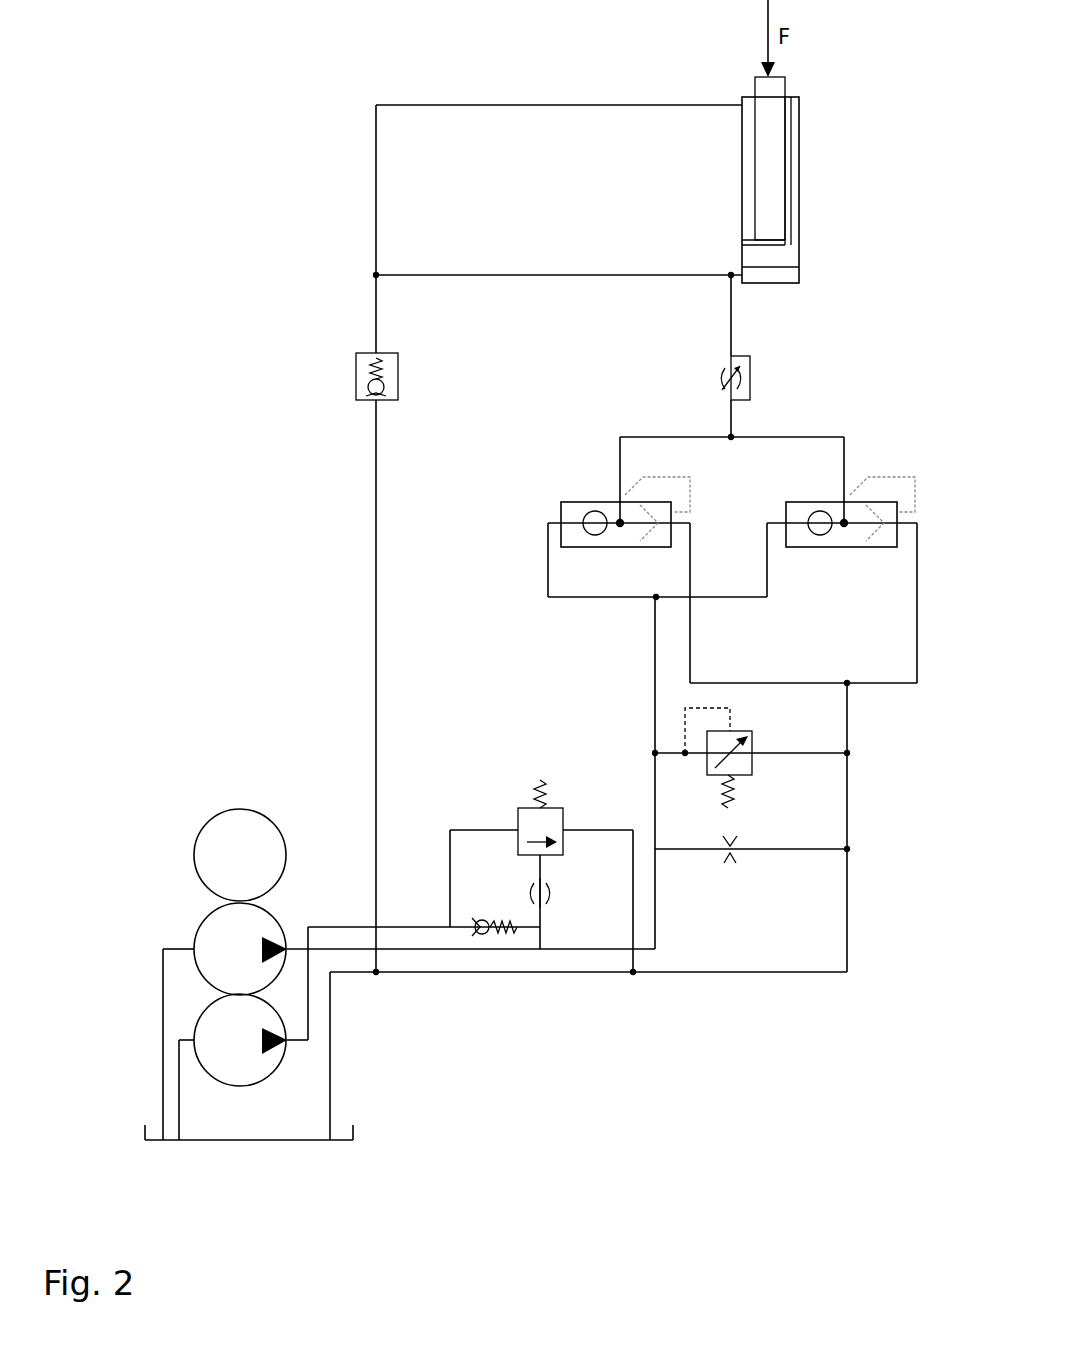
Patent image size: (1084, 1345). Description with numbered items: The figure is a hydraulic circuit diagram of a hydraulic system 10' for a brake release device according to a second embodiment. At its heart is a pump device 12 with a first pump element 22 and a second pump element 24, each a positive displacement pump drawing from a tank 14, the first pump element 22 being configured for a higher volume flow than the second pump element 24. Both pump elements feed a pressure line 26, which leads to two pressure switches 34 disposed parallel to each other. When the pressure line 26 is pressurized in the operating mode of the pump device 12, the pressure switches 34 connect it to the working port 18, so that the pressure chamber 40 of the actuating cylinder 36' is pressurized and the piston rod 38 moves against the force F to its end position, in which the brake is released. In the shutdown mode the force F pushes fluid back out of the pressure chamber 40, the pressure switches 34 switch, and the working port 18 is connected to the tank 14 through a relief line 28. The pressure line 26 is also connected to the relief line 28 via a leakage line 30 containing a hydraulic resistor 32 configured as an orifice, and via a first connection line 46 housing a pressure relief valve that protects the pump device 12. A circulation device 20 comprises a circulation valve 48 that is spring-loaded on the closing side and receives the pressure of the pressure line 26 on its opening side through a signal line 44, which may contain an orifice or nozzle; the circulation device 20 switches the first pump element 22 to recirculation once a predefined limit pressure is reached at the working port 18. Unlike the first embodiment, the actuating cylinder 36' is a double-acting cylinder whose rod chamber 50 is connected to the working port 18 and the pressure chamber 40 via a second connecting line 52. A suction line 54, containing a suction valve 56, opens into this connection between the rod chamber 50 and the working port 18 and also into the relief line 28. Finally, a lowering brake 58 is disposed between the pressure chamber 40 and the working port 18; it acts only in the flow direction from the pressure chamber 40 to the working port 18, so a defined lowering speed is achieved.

The hydraulic system 10' is at (235, 318).
The pump device 12 is at (167, 822).
The tank 14 is at (342, 1127).
The working port 18 is at (731, 437).
The circulation device 20 is at (470, 870).
The first pump element 22 is at (198, 1020).
The second pump element 24 is at (200, 925).
The pressure line 26 is at (655, 667).
The relief line 28 is at (847, 793).
The leakage line 30 is at (752, 865).
The hydraulic resistor 32 is at (730, 855).
The pressure switch 34 is at (580, 502).
The actuating cylinder 36' is at (781, 205).
The piston rod 38 is at (765, 138).
The pressure chamber 40 is at (773, 277).
The signal line 44 is at (743, 731).
The first connection line 46 is at (807, 753).
The circulation valve 48 is at (558, 808).
The rod chamber 50 is at (748, 177).
The second connecting line 52 is at (482, 275).
The suction line 54 is at (376, 575).
The suction valve 56 is at (362, 405).
The lowering brake 58 is at (686, 369).